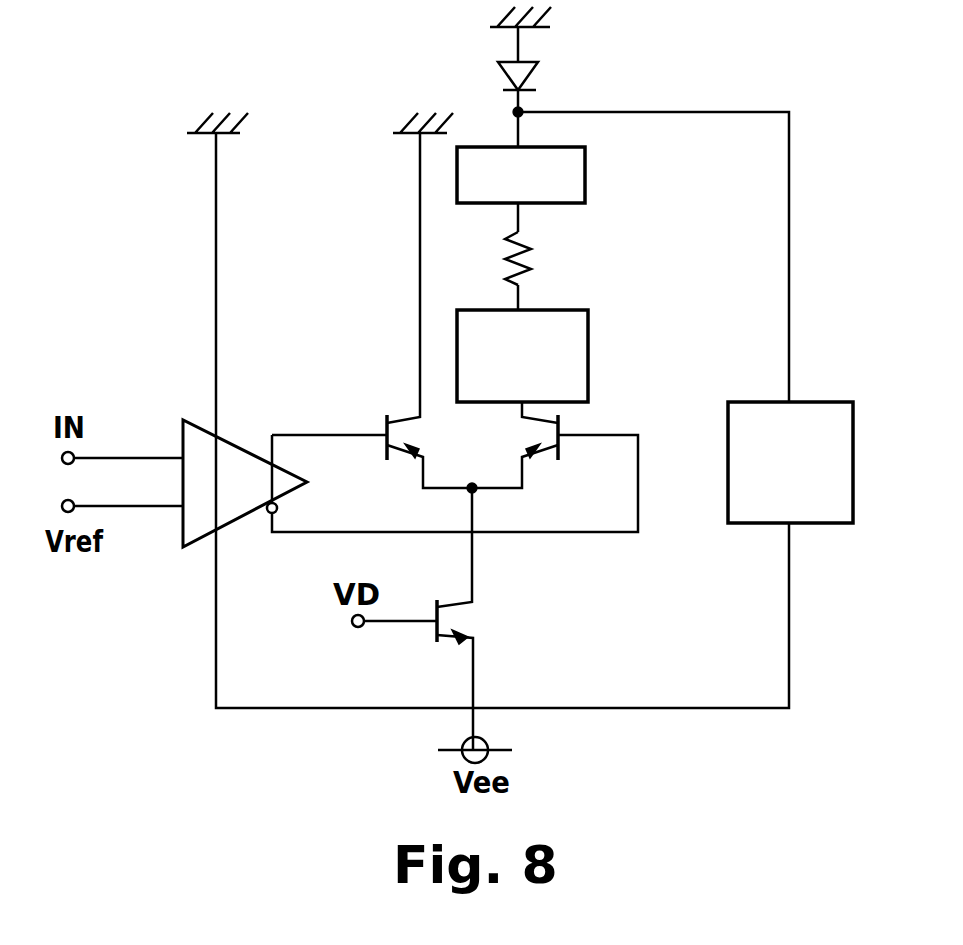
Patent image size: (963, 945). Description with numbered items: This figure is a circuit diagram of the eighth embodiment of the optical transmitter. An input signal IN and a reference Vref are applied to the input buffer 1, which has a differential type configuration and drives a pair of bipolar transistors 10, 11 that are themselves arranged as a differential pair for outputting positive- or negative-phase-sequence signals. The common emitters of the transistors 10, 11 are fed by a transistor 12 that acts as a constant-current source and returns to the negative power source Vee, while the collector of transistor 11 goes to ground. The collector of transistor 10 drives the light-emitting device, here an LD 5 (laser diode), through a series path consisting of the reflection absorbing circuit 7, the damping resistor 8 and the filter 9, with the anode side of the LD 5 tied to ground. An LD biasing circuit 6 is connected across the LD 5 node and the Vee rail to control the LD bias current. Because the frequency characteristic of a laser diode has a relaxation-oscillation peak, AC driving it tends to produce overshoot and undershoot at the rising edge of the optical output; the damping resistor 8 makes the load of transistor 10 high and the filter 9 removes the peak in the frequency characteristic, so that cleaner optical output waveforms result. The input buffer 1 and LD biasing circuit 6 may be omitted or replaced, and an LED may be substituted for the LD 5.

The input buffer 1 is at (183, 430).
The LD (laser diode) 5 is at (499, 72).
The LD biasing circuit 6 is at (728, 465).
The reflection absorbing circuit 7 is at (590, 357).
The damping resistor 8 is at (543, 287).
The filter 9 is at (588, 177).
The transistor 10 is at (575, 418).
The transistor 11 is at (376, 418).
The transistor 12 is at (487, 620).